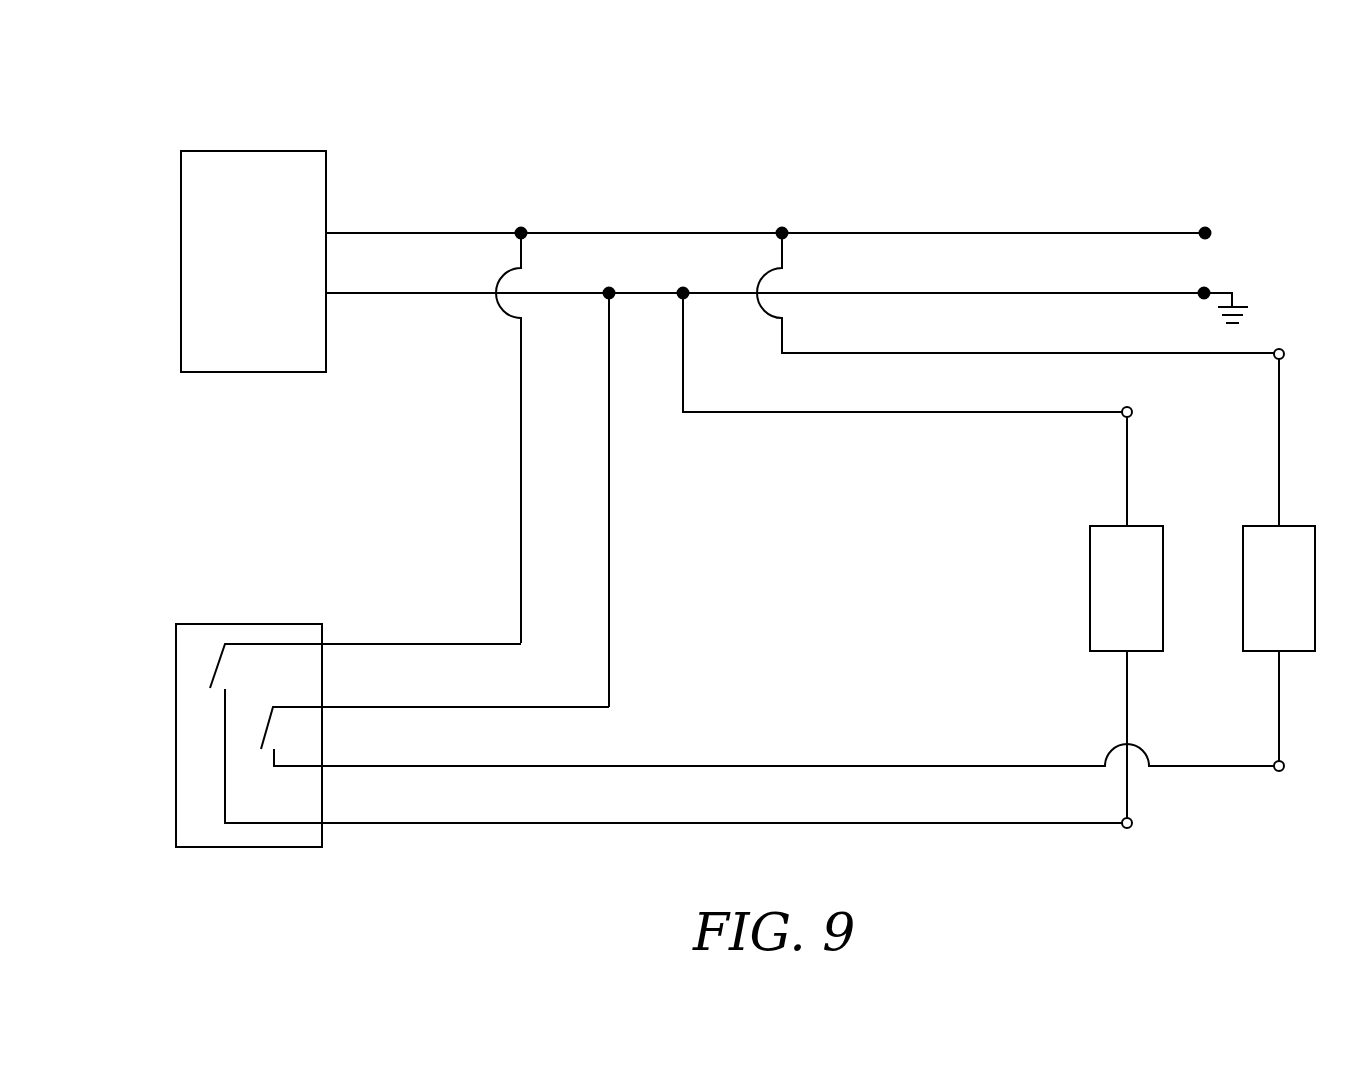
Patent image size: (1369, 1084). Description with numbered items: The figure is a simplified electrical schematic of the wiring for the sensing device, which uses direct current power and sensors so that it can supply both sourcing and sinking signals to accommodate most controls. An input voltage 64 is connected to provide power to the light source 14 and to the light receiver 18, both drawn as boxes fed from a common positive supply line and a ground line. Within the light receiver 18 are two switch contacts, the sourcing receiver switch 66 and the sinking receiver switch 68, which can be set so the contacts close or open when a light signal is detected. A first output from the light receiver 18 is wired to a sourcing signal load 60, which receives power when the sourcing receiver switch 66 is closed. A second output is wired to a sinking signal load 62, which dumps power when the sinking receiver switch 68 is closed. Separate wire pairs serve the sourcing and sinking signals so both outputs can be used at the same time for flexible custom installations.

The light source 14 is at (253, 151).
The light receiver 18 is at (263, 624).
The sourcing signal load 60 is at (1090, 583).
The sinking signal load 62 is at (1255, 651).
The input voltage 64 is at (1277, 220).
The sourcing receiver switch 66 is at (212, 672).
The sinking receiver switch 68 is at (257, 727).